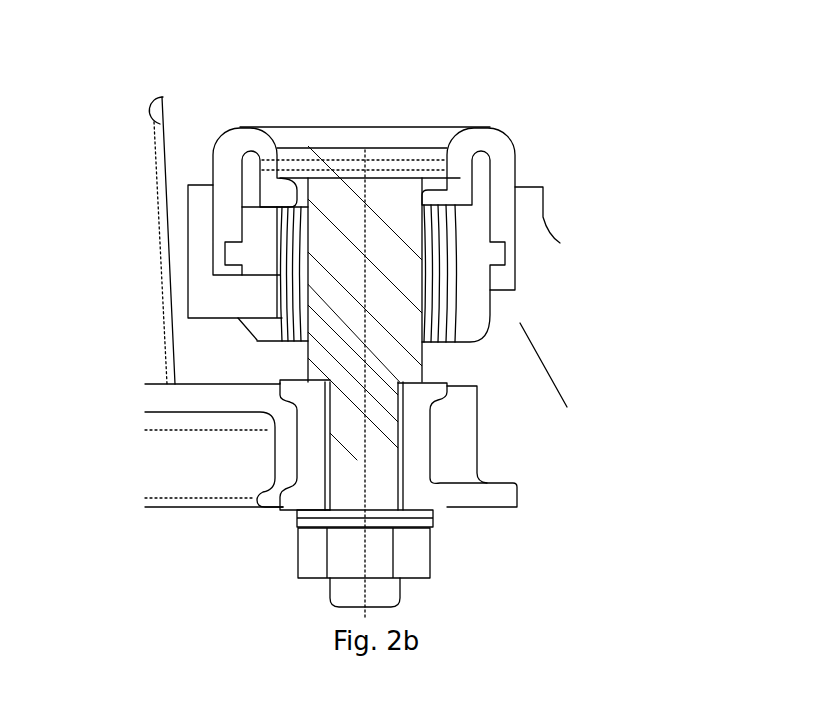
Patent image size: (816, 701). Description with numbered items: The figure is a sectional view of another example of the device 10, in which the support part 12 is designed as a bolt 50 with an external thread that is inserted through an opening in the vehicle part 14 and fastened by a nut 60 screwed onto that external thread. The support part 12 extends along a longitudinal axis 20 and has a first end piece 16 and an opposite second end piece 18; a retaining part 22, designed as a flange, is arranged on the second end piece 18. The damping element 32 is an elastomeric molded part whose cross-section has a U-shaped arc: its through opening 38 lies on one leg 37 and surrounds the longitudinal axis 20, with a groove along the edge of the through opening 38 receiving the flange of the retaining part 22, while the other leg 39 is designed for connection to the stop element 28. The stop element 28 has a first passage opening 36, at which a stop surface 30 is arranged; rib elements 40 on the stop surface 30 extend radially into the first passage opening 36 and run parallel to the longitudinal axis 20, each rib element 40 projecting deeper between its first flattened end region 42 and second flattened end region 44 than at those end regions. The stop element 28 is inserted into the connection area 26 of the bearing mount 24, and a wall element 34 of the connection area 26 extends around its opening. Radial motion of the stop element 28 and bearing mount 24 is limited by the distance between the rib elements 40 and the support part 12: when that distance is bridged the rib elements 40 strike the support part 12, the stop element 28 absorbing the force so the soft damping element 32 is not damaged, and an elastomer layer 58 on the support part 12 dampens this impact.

The device 10 is at (517, 90).
The support part 12 is at (503, 313).
The vehicle part 14 is at (172, 455).
The first end piece 16 is at (412, 363).
The second end piece 18 is at (313, 227).
The longitudinal axis 20 is at (365, 150).
The retaining part 22 is at (280, 136).
The bearing mount 24 is at (507, 320).
The connection area 26 is at (378, 295).
The stop element 28 is at (560, 243).
The stop surface 30 is at (262, 282).
The damping element 32 is at (498, 140).
The wall element 34 is at (200, 280).
The first passage opening 36 is at (250, 343).
The leg 37 is at (450, 162).
The through opening 38 is at (292, 183).
The other leg 39 is at (560, 278).
The rib element 40 is at (250, 276).
The first flattened end region 42 is at (243, 248).
The second flattened end region 44 is at (213, 318).
The bolt 50 is at (350, 468).
The elastomer layer 58 is at (560, 268).
The nut 60 is at (410, 550).